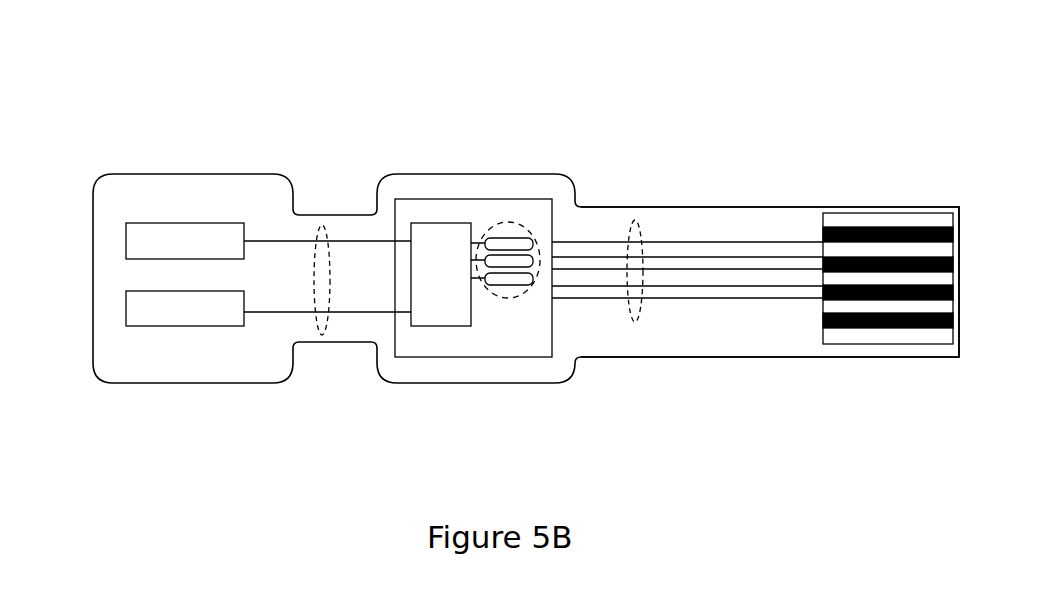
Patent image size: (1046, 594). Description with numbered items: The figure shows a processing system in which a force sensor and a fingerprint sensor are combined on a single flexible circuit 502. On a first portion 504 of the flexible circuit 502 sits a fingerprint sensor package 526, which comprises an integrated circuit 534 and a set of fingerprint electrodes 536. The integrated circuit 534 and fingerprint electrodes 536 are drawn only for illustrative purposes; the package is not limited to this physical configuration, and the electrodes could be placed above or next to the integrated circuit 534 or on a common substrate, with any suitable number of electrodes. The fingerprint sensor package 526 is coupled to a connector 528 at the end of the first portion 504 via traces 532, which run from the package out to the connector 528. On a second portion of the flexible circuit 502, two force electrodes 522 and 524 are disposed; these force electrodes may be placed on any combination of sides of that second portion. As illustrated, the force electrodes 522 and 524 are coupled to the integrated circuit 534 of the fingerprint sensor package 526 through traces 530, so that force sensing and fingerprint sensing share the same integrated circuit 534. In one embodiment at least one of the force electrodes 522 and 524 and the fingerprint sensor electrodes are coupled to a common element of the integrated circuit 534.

The flexible circuit 502 is at (197, 173).
The first portion 504 is at (559, 173).
The force electrode 522 is at (143, 223).
The force electrode 524 is at (126, 307).
The fingerprint sensor package 526 is at (476, 199).
The connector 528 is at (840, 212).
The traces 530 is at (326, 238).
The traces 532 is at (637, 236).
The integrated circuit 534 is at (426, 285).
The fingerprint electrodes 536 is at (495, 293).